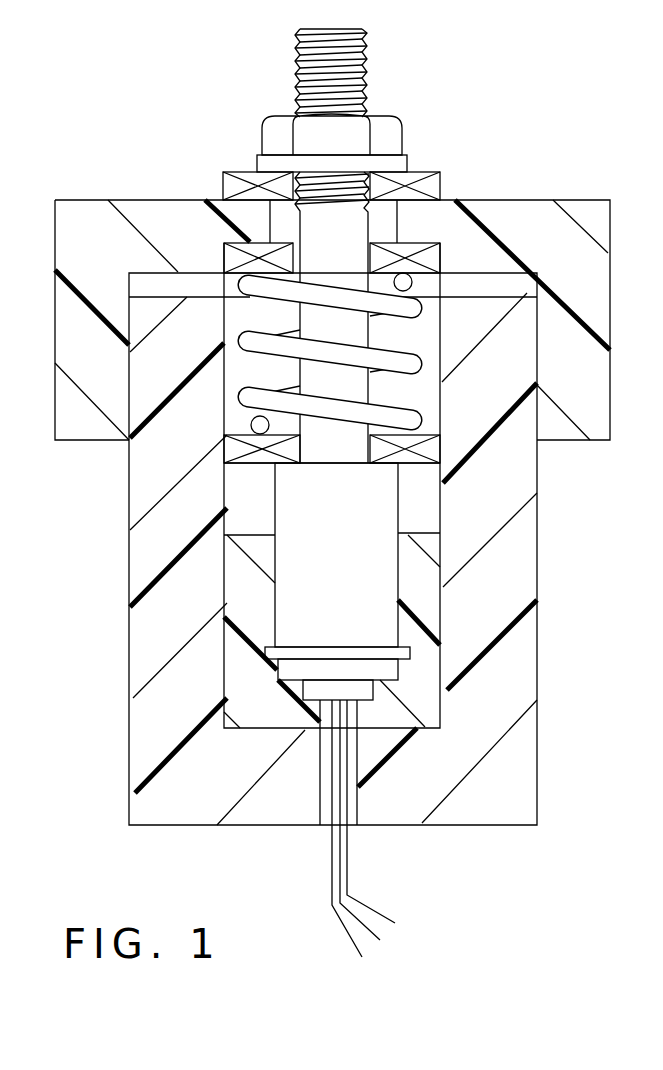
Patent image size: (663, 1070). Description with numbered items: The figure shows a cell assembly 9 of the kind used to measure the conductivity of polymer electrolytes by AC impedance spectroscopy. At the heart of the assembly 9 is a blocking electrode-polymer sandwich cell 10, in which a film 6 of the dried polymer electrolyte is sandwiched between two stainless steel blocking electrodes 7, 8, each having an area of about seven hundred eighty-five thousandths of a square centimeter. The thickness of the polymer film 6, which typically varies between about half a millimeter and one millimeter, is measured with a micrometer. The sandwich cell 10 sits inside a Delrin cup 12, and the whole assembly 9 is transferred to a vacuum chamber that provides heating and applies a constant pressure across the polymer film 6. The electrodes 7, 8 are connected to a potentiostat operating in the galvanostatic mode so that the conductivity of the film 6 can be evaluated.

The film 6 is at (403, 657).
The stainless steel blocking electrode 7 is at (445, 692).
The stainless steel blocking electrode 8 is at (383, 598).
The assembly 9 is at (104, 543).
The blocking electrode-polymer sandwich cell 10 is at (266, 616).
The Delrin cup 12 is at (216, 587).